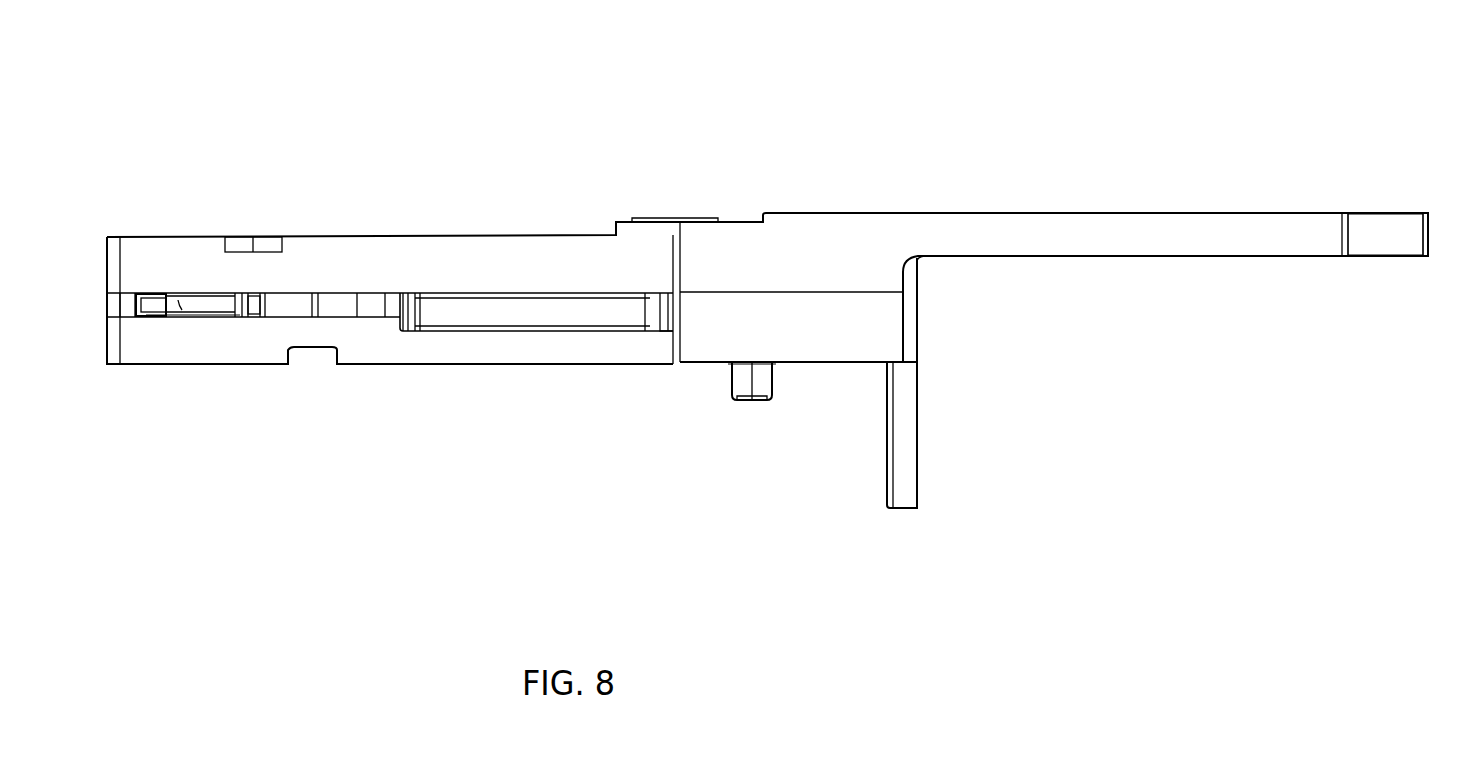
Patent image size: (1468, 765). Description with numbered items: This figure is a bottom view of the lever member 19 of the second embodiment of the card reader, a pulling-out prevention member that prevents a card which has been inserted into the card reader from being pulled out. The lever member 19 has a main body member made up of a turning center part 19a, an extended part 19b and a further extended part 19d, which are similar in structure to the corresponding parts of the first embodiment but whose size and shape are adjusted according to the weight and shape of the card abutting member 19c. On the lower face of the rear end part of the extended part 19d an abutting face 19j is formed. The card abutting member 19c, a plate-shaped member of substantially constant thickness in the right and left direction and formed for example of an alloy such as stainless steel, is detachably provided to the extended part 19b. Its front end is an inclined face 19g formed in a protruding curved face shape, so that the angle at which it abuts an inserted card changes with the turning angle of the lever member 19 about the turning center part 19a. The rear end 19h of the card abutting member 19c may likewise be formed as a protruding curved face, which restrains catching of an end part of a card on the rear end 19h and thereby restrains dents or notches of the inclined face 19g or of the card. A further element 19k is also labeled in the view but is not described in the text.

The lever member 19 is at (1328, 106).
The turning center part 19a is at (745, 222).
The extended part 19b is at (428, 236).
The card abutting member 19c is at (219, 320).
The extended part 19d is at (1180, 213).
The inclined face 19g is at (182, 320).
The rear end 19h is at (264, 320).
The abutting face 19j is at (1382, 245).
The screw boss 19k is at (757, 405).